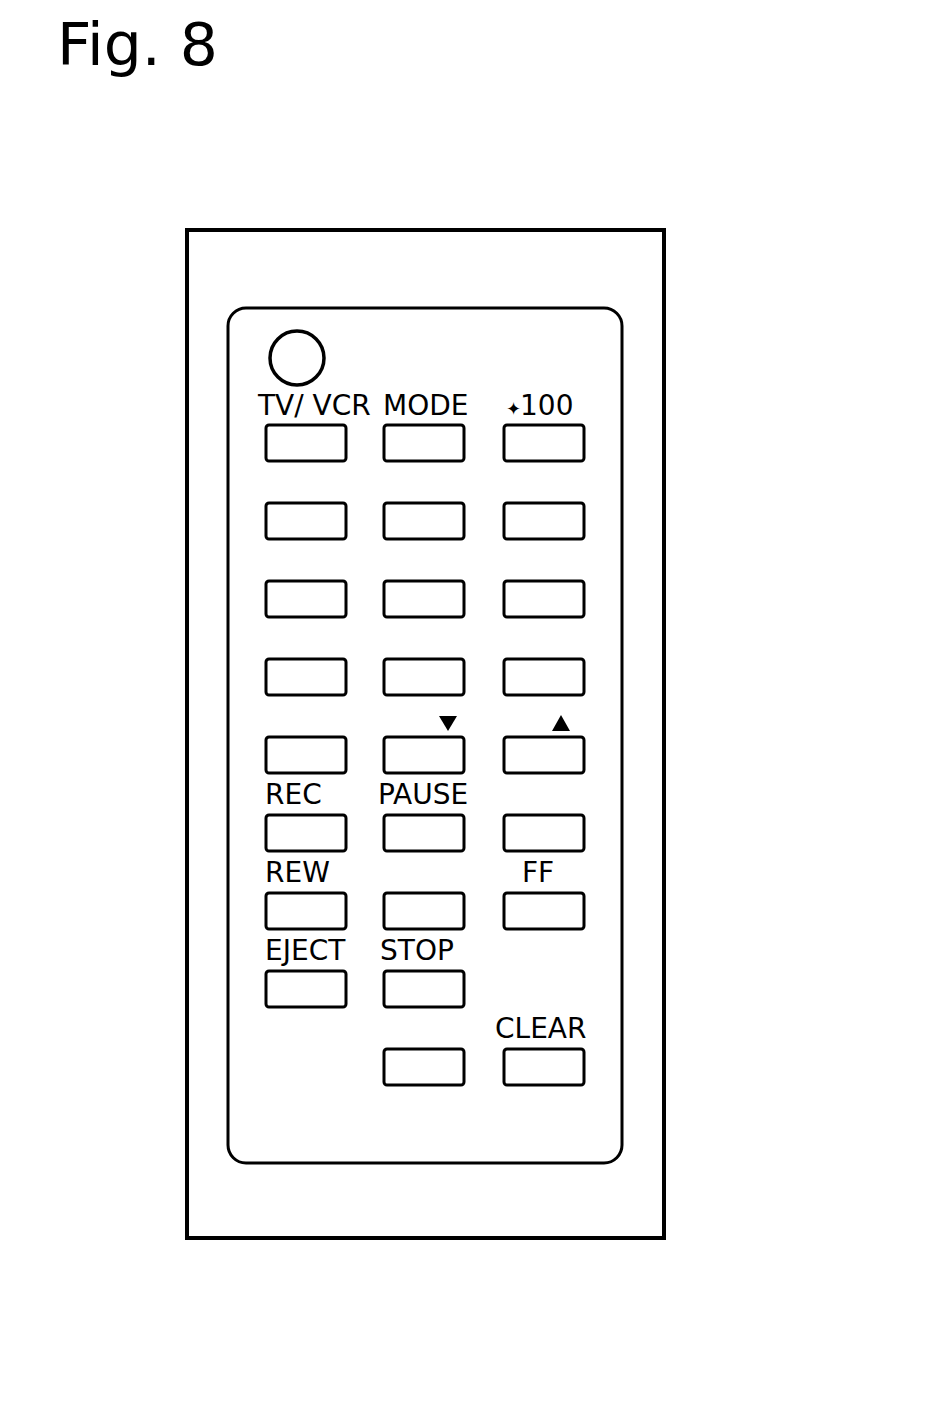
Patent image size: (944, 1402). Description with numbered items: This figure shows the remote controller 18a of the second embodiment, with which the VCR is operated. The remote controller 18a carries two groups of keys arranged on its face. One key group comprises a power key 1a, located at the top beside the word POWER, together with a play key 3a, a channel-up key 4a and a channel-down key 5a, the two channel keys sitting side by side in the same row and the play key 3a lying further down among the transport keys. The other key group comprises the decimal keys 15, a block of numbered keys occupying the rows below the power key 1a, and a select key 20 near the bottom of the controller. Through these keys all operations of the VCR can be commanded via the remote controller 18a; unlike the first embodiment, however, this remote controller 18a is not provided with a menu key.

The remote controller 18a is at (672, 366).
The power key 1a is at (283, 357).
The decimal keys 15 is at (177, 498).
The channel-down key 5a is at (438, 753).
The channel-up key 4a is at (575, 755).
The play key 3a is at (450, 917).
The select key 20 is at (398, 1063).